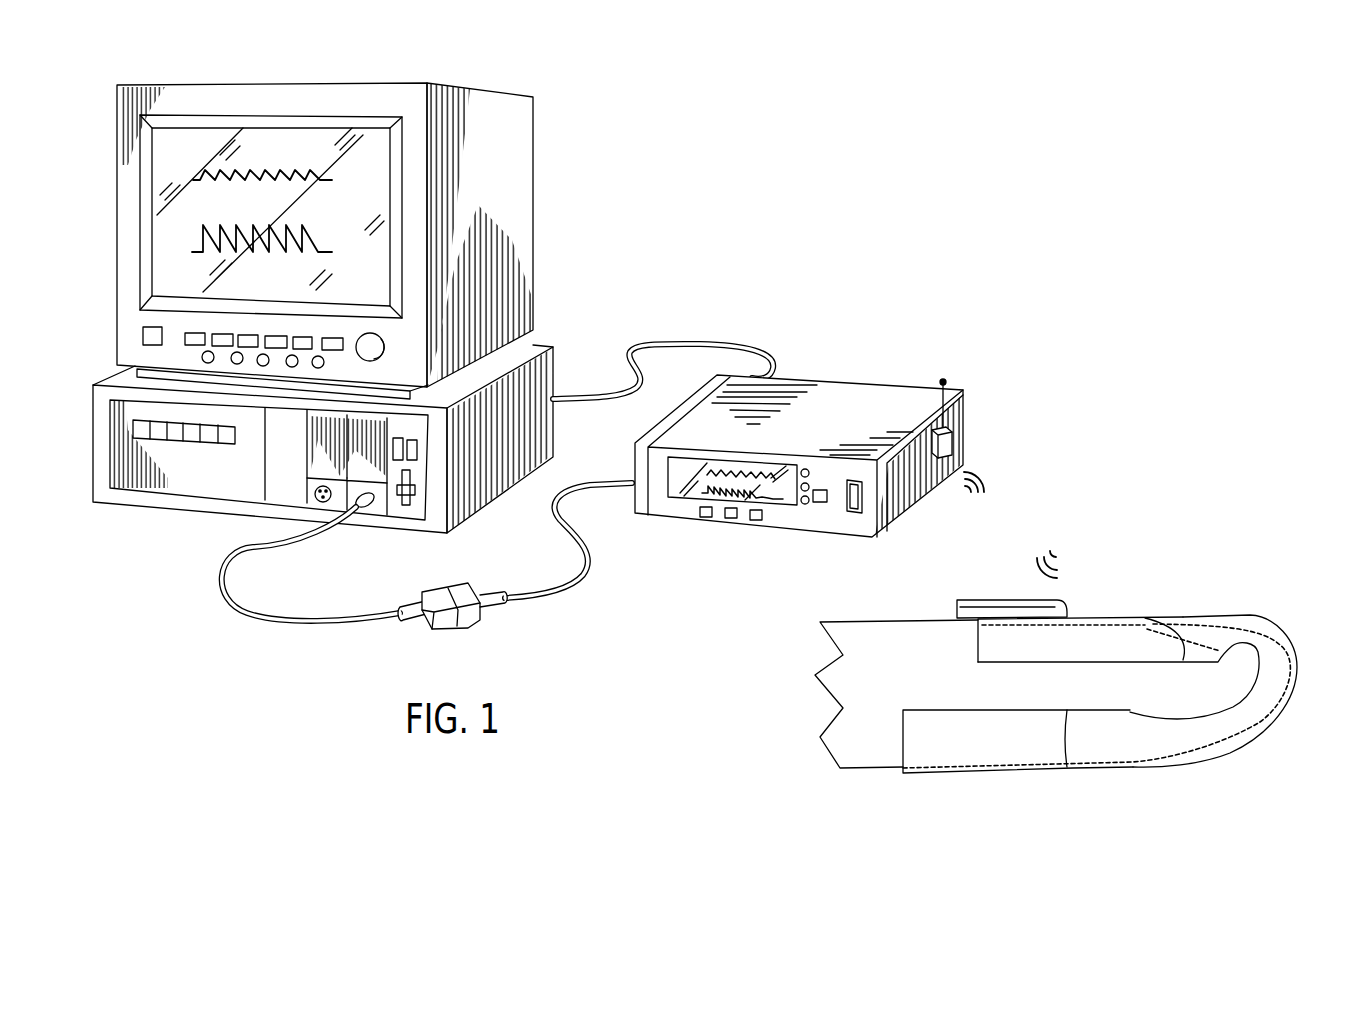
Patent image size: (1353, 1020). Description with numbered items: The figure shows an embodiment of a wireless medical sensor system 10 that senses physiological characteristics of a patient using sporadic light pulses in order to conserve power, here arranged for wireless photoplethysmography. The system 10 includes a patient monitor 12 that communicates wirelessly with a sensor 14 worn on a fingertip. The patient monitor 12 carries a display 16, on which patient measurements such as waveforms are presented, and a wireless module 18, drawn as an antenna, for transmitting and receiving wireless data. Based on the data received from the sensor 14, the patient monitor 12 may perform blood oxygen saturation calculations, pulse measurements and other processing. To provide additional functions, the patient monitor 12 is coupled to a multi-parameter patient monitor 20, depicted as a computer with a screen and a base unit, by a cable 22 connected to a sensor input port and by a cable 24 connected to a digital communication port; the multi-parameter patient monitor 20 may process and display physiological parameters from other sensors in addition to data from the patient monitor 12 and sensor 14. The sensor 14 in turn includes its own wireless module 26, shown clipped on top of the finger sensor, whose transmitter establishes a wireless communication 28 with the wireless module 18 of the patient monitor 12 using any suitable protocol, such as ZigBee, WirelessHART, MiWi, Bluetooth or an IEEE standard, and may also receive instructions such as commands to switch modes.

The wireless medical sensor system 10 is at (825, 221).
The patient monitor 12 is at (827, 390).
The sensor 14 is at (1066, 660).
The display 16 is at (740, 497).
The wireless module 18 is at (946, 380).
The multi-parameter patient monitor 20 is at (484, 93).
The cable 22 is at (310, 623).
The cable 24 is at (692, 341).
The wireless module 26 is at (1066, 600).
The wireless communication 28 is at (997, 490).